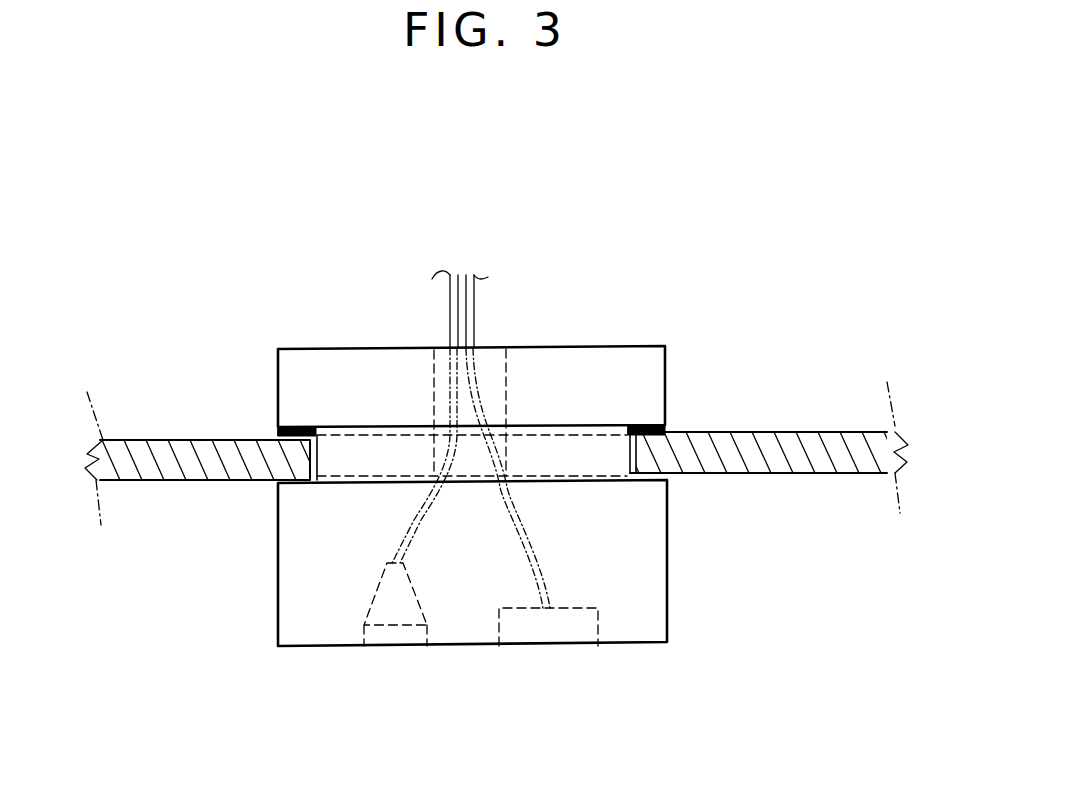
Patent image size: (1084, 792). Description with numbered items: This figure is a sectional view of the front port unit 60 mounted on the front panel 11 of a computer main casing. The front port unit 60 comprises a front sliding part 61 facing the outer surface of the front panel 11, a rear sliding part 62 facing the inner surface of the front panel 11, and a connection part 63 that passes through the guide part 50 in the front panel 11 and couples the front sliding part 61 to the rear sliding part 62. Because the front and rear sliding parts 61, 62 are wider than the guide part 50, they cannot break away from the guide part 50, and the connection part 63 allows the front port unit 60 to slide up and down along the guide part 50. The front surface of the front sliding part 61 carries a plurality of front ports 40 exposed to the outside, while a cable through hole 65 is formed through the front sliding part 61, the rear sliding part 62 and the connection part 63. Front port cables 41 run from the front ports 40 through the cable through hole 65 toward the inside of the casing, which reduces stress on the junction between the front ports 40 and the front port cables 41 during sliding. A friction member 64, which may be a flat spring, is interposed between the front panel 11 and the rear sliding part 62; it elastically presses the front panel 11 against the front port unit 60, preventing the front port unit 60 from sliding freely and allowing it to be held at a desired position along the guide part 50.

The front panel 11 is at (190, 480).
The front ports 40 is at (403, 647).
The front port cables 41 is at (468, 315).
The guide part 50 is at (319, 470).
The front port unit 60 is at (772, 235).
The front sliding part 61 is at (647, 613).
The rear sliding part 62 is at (652, 355).
The connection part 63 is at (597, 463).
The friction member 64 is at (275, 433).
The cable through hole 65 is at (430, 372).